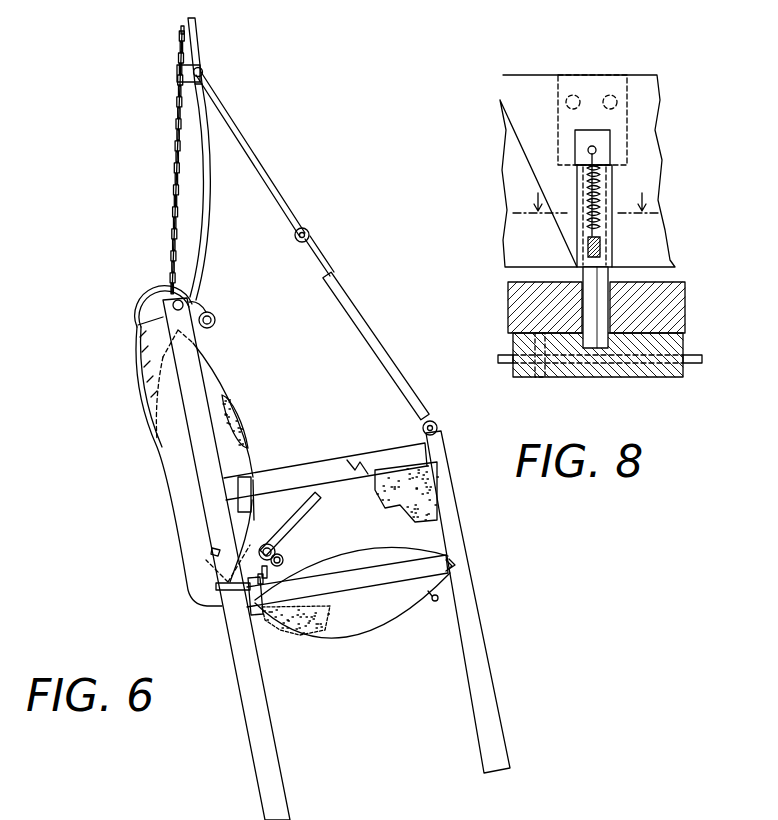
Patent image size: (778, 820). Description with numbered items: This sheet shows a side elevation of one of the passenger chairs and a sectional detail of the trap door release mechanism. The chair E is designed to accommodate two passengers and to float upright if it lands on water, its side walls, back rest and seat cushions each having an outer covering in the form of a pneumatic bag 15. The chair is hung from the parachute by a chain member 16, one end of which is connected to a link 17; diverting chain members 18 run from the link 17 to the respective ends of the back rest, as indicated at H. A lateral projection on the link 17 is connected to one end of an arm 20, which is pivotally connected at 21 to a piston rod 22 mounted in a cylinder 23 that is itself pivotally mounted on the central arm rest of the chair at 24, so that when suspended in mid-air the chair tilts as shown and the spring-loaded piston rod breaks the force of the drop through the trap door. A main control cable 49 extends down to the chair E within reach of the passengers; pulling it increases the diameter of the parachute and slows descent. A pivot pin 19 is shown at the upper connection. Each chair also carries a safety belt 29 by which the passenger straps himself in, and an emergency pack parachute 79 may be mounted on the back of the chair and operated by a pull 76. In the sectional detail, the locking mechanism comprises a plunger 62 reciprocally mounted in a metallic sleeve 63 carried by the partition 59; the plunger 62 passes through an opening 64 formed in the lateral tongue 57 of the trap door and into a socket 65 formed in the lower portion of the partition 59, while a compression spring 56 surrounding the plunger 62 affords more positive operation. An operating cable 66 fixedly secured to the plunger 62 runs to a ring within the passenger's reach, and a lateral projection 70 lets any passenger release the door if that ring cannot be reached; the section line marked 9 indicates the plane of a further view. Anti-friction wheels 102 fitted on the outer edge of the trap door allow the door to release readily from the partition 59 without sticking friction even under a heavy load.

In FIG. 6, the chain member 16 is at (179, 47).
In FIG. 6, the main control cable 49 is at (198, 47).
In FIG. 6, the link 17 is at (179, 75).
In FIG. 6, the pivot pin 19 is at (200, 73).
In FIG. 6, the diverting chain members 18 is at (175, 180).
In FIG. 6, the arm 20 is at (260, 167).
In FIG. 6, the pivotal connection 21 is at (308, 226).
In FIG. 6, the piston rod 22 is at (323, 262).
In FIG. 6, the cylinder 23 is at (377, 342).
In FIG. 6, the pivotal mounting 24 is at (437, 427).
In FIG. 6, the back rest ends H is at (162, 293).
In FIG. 6, the pull 76 is at (211, 312).
In FIG. 6, the emergency pack parachute 79 is at (146, 371).
In FIG. 6, the pneumatic bag 15 is at (213, 377).
In FIG. 6, the safety belt 29 is at (307, 513).
In FIG. 6, the chair E is at (233, 607).
In FIG. 8, the partition 59 is at (690, 385).
In FIG. 8, the metallic sleeve 63 is at (612, 188).
In FIG. 8, the operating cable 66 is at (590, 157).
In FIG. 8, the compression spring 56 is at (590, 190).
In FIG. 8, the lateral projection 70 is at (588, 248).
In FIG. 8, the section line 9 is at (585, 215).
In FIG. 8, the opening 64 is at (687, 293).
In FIG. 8, the lateral tongue 57 is at (682, 320).
In FIG. 8, the plunger 62 is at (600, 272).
In FIG. 8, the socket 65 is at (598, 348).
In FIG. 8, the anti-friction wheels 102 is at (540, 377).